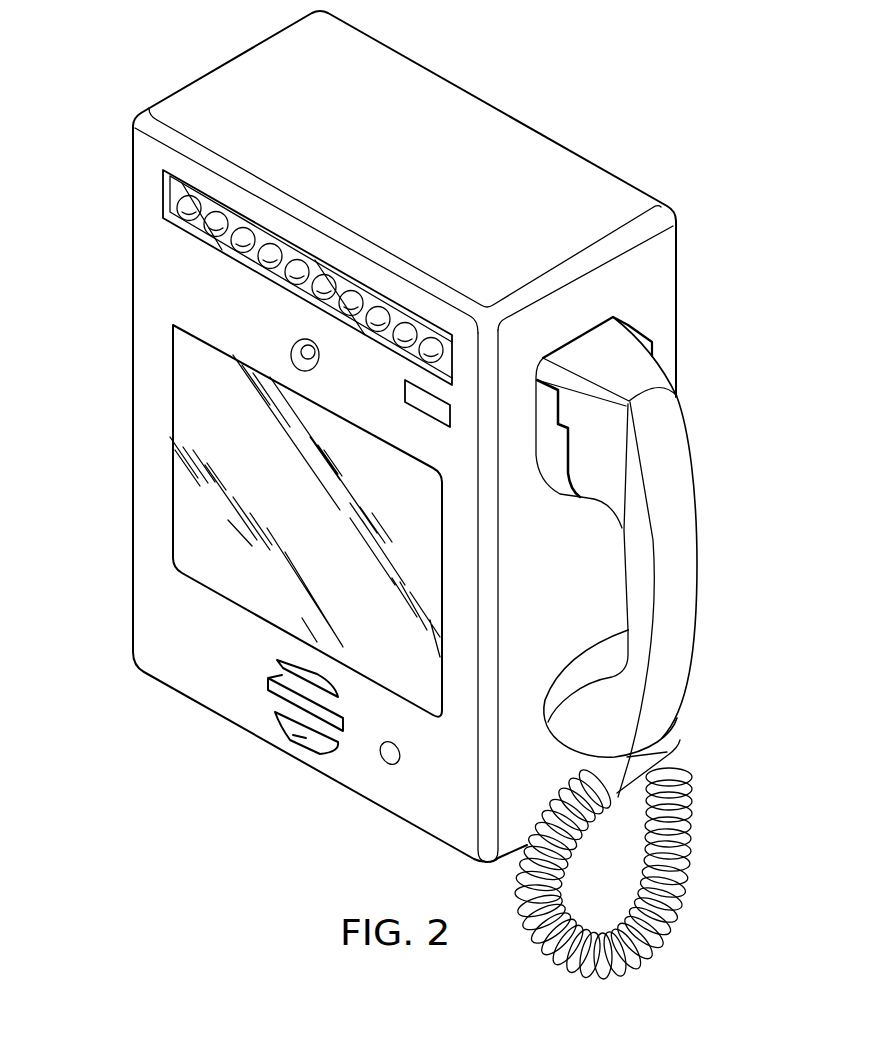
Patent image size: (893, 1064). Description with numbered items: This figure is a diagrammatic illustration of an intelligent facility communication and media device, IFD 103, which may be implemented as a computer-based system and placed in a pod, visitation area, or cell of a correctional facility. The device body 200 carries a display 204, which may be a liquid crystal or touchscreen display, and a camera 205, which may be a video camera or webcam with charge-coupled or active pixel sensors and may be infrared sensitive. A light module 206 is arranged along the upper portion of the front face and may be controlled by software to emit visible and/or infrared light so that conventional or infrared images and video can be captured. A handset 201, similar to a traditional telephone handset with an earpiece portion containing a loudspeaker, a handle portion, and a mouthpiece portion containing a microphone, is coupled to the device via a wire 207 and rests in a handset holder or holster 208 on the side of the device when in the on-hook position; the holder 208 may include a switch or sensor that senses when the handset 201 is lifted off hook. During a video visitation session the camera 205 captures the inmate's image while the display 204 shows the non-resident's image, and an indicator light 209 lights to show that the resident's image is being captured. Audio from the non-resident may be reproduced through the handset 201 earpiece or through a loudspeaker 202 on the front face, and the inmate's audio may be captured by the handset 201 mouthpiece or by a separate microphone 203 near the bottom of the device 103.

The intelligent facility device 103 is at (580, 96).
The housing 200 is at (132, 386).
The handset 201 is at (700, 575).
The loudspeaker 202 is at (272, 702).
The microphone 203 is at (382, 765).
The display 204 is at (187, 528).
The camera 205 is at (294, 348).
The light module 206 is at (158, 192).
The wire 207 is at (693, 841).
The handset holder 208 is at (562, 488).
The indicator light 209 is at (427, 417).